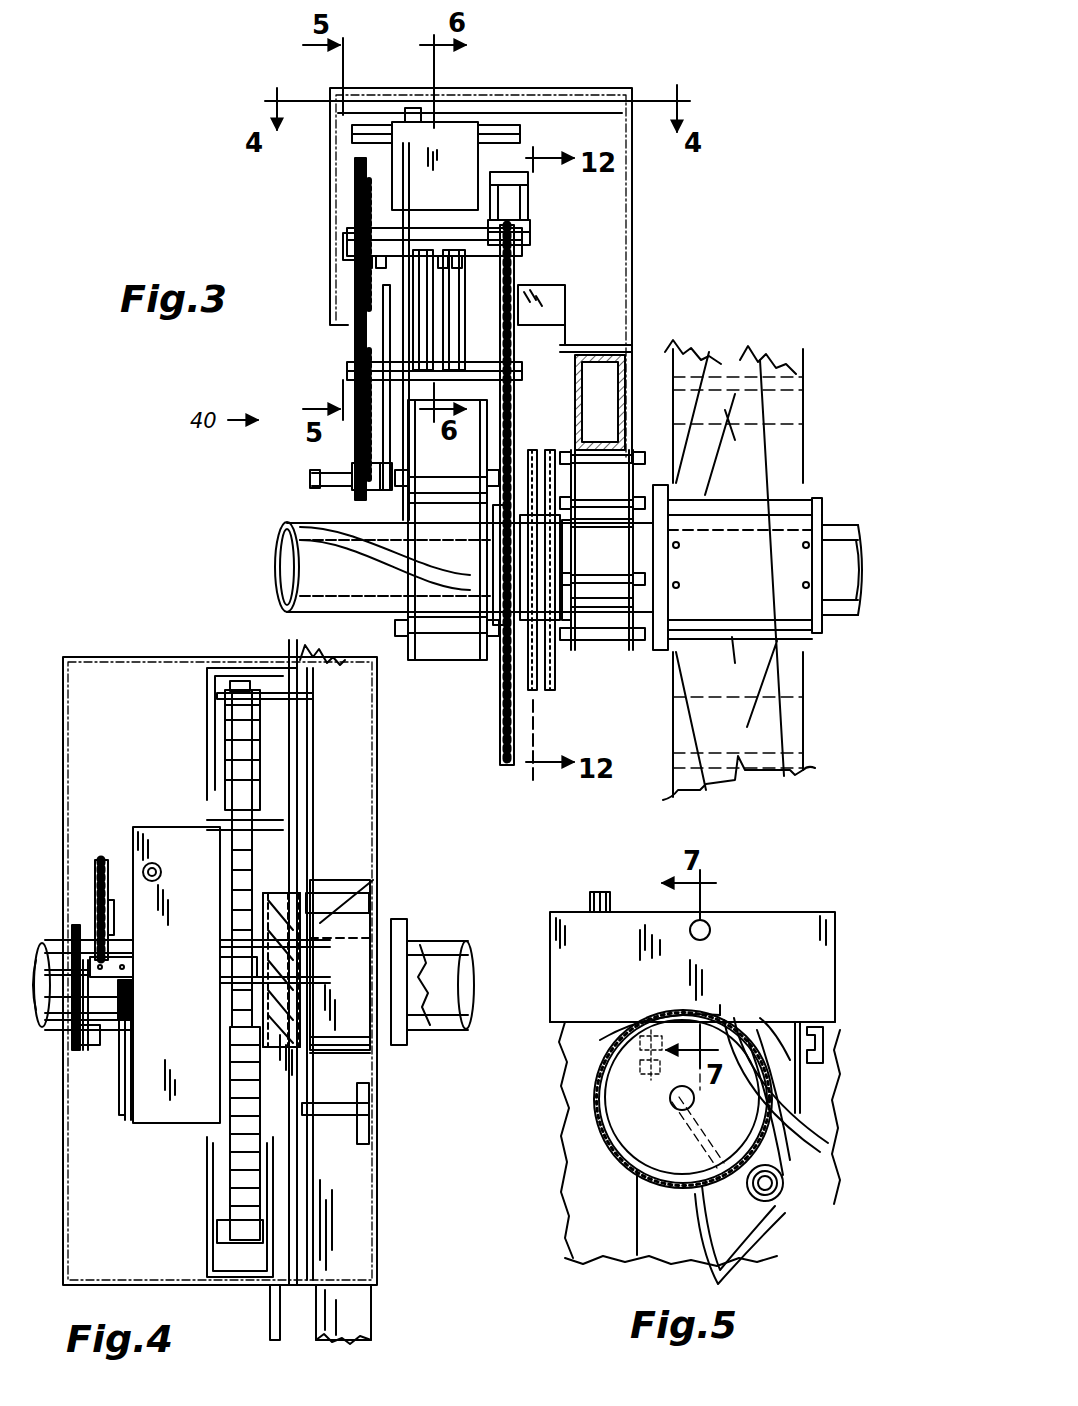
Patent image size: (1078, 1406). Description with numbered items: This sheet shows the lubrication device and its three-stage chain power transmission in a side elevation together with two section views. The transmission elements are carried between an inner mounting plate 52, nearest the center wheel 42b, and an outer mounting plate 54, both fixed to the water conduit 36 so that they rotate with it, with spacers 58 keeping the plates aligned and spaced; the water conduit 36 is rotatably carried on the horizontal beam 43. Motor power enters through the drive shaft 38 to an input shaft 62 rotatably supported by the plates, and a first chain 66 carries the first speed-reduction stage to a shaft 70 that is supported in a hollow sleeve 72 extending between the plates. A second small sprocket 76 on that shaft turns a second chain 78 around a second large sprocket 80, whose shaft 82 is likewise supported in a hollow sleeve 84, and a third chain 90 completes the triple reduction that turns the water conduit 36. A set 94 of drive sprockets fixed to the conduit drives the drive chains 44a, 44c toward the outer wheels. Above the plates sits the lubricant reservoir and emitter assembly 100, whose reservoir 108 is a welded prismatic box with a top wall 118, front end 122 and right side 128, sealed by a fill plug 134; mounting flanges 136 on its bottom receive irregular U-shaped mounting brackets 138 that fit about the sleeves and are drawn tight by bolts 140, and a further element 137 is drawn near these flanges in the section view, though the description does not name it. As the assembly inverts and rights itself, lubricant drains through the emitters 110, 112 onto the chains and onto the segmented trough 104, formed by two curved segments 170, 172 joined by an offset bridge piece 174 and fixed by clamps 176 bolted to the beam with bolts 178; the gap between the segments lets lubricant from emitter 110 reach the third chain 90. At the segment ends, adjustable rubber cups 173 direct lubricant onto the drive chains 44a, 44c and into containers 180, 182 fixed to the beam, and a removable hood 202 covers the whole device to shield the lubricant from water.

In FIG. 3, the water conduit 36 is at (278, 593).
In FIG. 4, the water conduit 36 is at (66, 1000).
In FIG. 3, the drive shaft 38 is at (312, 478).
In FIG. 4, the drive shaft 38 is at (56, 960).
In FIG. 3, the center wheel 42b is at (782, 360).
In FIG. 3, the horizontal beam 43 is at (583, 355).
In FIG. 4, the horizontal beam 43 is at (355, 1292).
In FIG. 4, the drive chain 44a is at (270, 1315).
In FIG. 4, the drive chain 44c is at (290, 656).
In FIG. 3, the inner mounting plate 52 is at (290, 525).
In FIG. 3, the outer mounting plate 54 is at (300, 566).
In FIG. 4, the outer mounting plate 54 is at (187, 987).
In FIG. 5, the outer mounting plate 54 is at (661, 1224).
In FIG. 3, the spacers 58 is at (310, 606).
In FIG. 3, the input shaft 62 is at (352, 474).
In FIG. 4, the input shaft 62 is at (82, 1040).
In FIG. 3, the first chain 66 is at (384, 400).
In FIG. 4, the first chain 66 is at (124, 1090).
In FIG. 5, the first chain 66 is at (716, 1268).
In FIG. 5, the shaft 70 is at (763, 1192).
In FIG. 3, the hollow sleeve 72 is at (430, 352).
In FIG. 5, the second small sprocket 76 is at (690, 1197).
In FIG. 3, the second chain 78 is at (360, 258).
In FIG. 4, the second chain 78 is at (100, 860).
In FIG. 5, the second chain 78 is at (563, 1090).
In FIG. 5, the second large sprocket 80 is at (642, 1134).
In FIG. 5, the shaft 82 is at (670, 1100).
In FIG. 3, the hollow sleeve 84 is at (375, 236).
In FIG. 3, the third chain 90 is at (500, 684).
In FIG. 4, the third chain 90 is at (325, 868).
In FIG. 3, the set of drive sprockets 94 is at (550, 692).
In FIG. 4, the lubricant reservoir and emitter assembly 100 is at (118, 812).
In FIG. 3, the segmented trough 104 is at (528, 172).
In FIG. 4, the reservoir 108 is at (162, 1125).
In FIG. 5, the reservoir 108 is at (738, 912).
In FIG. 3, the emitter 110 is at (493, 135).
In FIG. 4, the emitter 110 is at (225, 957).
In FIG. 3, the emitter 112 is at (372, 135).
In FIG. 4, the emitter 112 is at (66, 900).
In FIG. 5, the emitter 112 is at (712, 940).
In FIG. 4, the top wall 118 is at (148, 1108).
In FIG. 3, the front end 122 is at (410, 146).
In FIG. 5, the right side 128 is at (610, 994).
In FIG. 4, the fill plug 134 is at (155, 862).
In FIG. 5, the fill plug 134 is at (598, 892).
In FIG. 5, the mounting flanges 136 is at (804, 1030).
In FIG. 5, the clip 137 is at (724, 1016).
In FIG. 3, the U-shaped mounting brackets 138 is at (425, 292).
In FIG. 5, the bolts 140 is at (760, 1026).
In FIG. 4, the curved segment 170 is at (245, 1156).
In FIG. 4, the curved segment 172 is at (228, 736).
In FIG. 3, the adjustable rubber cups 173 is at (600, 362).
In FIG. 4, the adjustable rubber cups 173 is at (305, 718).
In FIG. 3, the offset bridge piece 174 is at (528, 206).
In FIG. 4, the offset bridge piece 174 is at (257, 923).
In FIG. 4, the clamp 176 is at (368, 1106).
In FIG. 4, the bolts 178 is at (314, 835).
In FIG. 4, the container 180 is at (210, 1256).
In FIG. 4, the container 182 is at (205, 670).
In FIG. 3, the hood 202 is at (540, 88).
In FIG. 4, the hood 202 is at (80, 657).